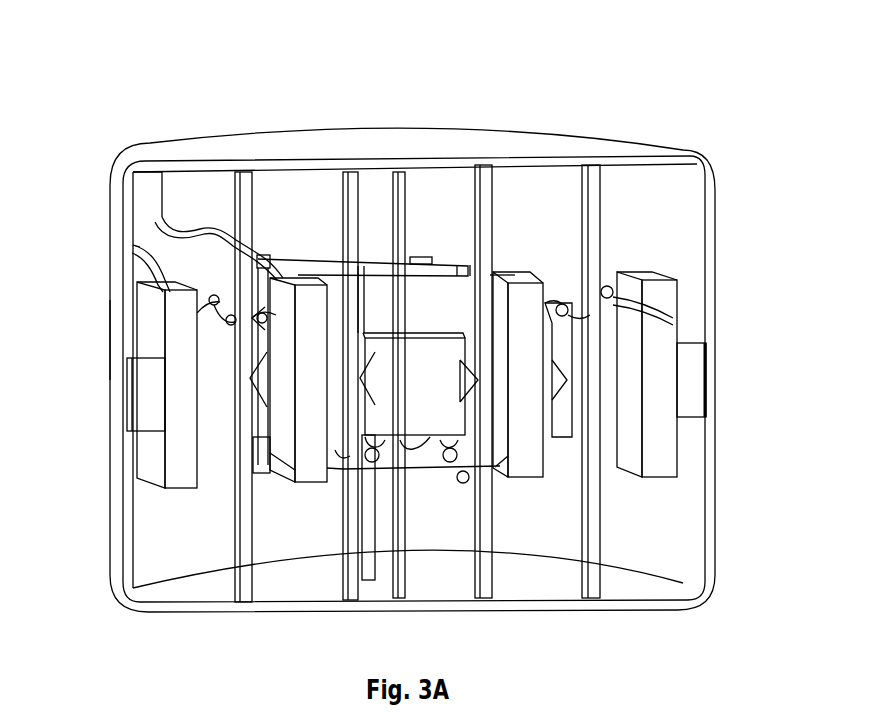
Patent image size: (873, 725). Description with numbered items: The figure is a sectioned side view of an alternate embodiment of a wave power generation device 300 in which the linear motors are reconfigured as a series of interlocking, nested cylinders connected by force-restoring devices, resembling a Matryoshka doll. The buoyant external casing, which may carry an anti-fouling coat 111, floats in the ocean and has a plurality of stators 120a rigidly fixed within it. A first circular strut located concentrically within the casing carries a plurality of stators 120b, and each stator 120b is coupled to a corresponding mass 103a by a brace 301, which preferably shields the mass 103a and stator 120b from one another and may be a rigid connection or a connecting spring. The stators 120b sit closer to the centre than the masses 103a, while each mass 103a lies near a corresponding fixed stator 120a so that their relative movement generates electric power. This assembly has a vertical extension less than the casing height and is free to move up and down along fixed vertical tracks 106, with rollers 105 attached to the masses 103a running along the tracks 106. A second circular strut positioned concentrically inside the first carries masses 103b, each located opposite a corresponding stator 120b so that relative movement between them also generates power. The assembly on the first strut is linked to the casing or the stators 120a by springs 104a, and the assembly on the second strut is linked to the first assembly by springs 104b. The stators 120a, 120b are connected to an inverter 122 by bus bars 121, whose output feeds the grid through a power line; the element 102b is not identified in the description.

The device 300 is at (622, 72).
The rollers 105 is at (478, 380).
The vertical tracks 106 is at (195, 225).
The anti-fouling coat 111 is at (117, 340).
The bus bars 121 is at (245, 210).
The inverter 122 is at (147, 202).
The stators 120a is at (185, 328).
The stators 120b is at (528, 302).
The brace 301 is at (243, 210).
The shaft 102b is at (305, 443).
The masses 103a is at (262, 387).
The masses 103b is at (393, 408).
The springs 104a is at (623, 303).
The springs 104b is at (425, 440).